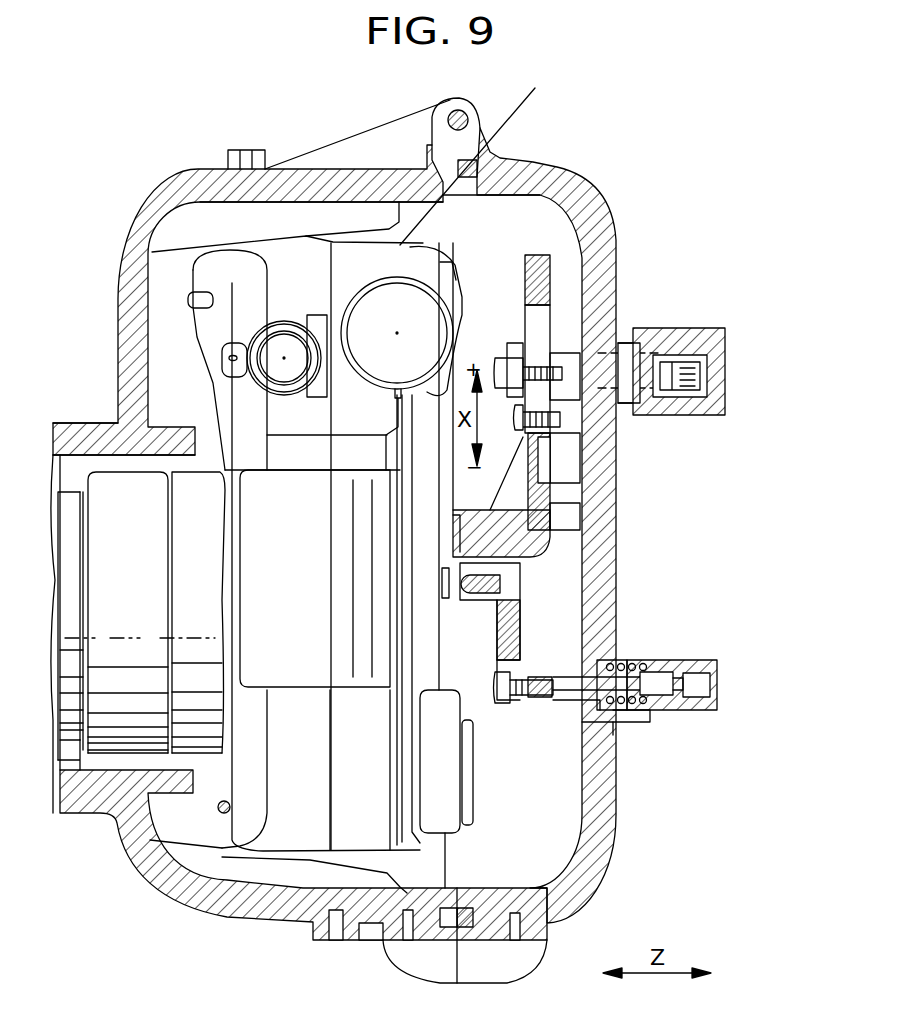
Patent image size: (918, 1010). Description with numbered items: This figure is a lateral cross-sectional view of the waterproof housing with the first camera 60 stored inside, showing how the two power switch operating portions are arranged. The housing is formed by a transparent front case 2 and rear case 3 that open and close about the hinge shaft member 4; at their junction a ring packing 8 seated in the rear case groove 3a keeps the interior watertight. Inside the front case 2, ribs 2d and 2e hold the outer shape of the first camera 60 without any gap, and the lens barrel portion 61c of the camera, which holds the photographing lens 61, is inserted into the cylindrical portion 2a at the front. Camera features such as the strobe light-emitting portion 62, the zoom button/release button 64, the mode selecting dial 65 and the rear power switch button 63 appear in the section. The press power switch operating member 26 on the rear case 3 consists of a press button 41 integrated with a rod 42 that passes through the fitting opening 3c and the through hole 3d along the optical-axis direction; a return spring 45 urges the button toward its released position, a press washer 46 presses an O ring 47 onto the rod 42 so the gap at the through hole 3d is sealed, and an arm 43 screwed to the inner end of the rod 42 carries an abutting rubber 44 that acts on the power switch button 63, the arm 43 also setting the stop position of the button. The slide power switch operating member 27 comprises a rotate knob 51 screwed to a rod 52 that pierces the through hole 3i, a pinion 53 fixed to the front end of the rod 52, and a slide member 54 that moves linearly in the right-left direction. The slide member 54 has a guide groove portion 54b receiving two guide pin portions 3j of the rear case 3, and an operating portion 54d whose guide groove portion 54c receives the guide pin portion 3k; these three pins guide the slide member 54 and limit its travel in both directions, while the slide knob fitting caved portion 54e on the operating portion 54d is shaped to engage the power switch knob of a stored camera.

The front case 2 is at (280, 169).
The cylindrical portion 2a is at (67, 423).
The rib 2d is at (270, 863).
The rib 2e is at (252, 222).
The rear case 3 is at (578, 182).
The rear case groove 3a is at (481, 155).
The fitting opening 3c is at (625, 728).
The through hole 3d is at (625, 760).
The through hole 3i is at (645, 340).
The guide pin portions 3j is at (595, 435).
The guide pin portion 3k is at (582, 518).
The hinge shaft member 4 is at (440, 140).
The ring packing 8 is at (467, 162).
The press power switch operating member 26 is at (735, 700).
The slide power switch operating member 27 is at (735, 415).
The press button 41 is at (718, 664).
The rod 42 is at (569, 692).
The arm 43 is at (600, 655).
The abutting rubber 44 is at (572, 602).
The return spring 45 is at (640, 718).
The press washer 46 is at (648, 740).
The O ring 47 is at (600, 640).
The rotate knob 51 is at (720, 328).
The rod 52 is at (628, 330).
The pinion 53 is at (540, 323).
The slide member 54 is at (537, 255).
The guide groove portion 54b is at (552, 352).
The guide groove portion 54c is at (565, 480).
The operating portion 54d is at (572, 582).
The slide knob fitting caved portion 54e is at (545, 548).
The first camera 60 is at (200, 253).
The lens 61 is at (372, 302).
The lens barrel portion 61c is at (117, 707).
The strobe light-emitting portion 62 is at (152, 845).
The power switch button 63 is at (448, 598).
The zoom button/release button 64 is at (283, 355).
The mode selecting dial 65 is at (372, 258).